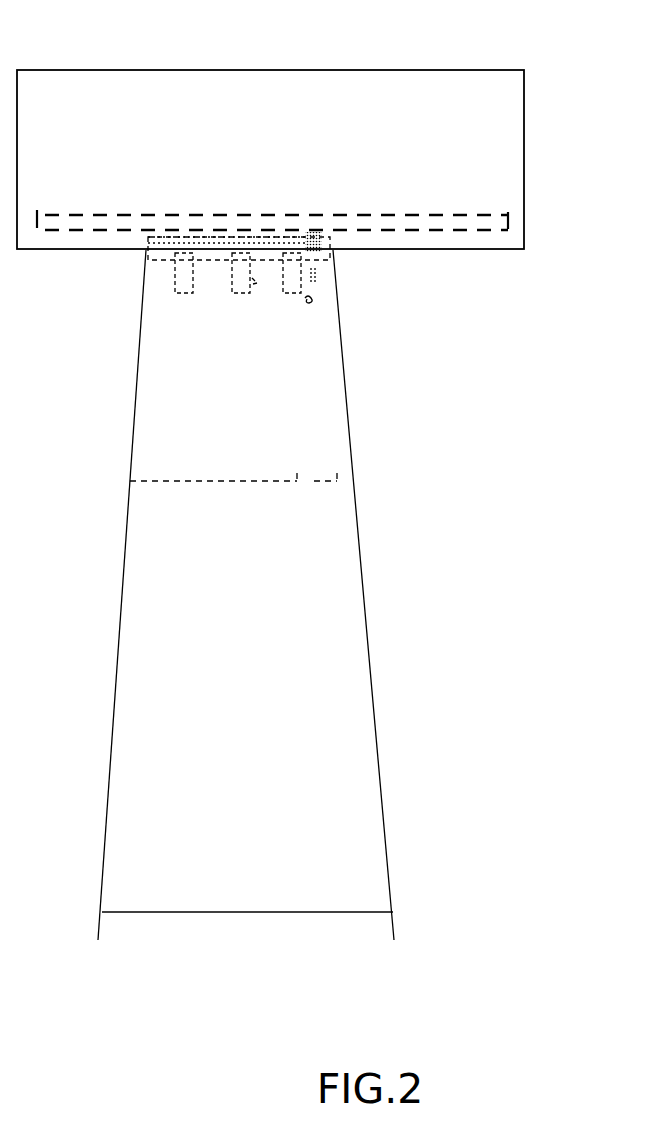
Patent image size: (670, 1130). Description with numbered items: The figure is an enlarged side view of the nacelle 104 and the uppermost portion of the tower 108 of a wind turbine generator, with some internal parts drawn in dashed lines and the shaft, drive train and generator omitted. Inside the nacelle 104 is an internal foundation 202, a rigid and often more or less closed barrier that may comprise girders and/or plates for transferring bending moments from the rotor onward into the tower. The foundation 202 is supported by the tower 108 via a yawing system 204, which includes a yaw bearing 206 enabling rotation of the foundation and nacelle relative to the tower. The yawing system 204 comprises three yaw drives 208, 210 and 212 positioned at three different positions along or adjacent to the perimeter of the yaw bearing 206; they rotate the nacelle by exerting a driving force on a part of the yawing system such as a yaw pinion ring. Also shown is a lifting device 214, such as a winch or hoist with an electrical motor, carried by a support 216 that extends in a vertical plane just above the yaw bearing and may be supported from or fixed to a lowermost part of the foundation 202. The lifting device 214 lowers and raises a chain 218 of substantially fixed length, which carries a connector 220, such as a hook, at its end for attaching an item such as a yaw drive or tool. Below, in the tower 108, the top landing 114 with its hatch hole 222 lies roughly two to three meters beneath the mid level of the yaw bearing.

The nacelle 104 is at (519, 68).
The internal foundation 202 is at (512, 218).
The yawing system 204 is at (111, 267).
The yaw bearing 206 is at (162, 262).
The yaw drive 208 is at (183, 292).
The yaw drive 210 is at (245, 293).
The yaw drive 212 is at (284, 293).
The lifting device 214 is at (312, 232).
The support 216 is at (163, 242).
The chain 218 is at (313, 274).
The connector 220 is at (315, 301).
The hatch hole 222 is at (315, 483).
The top landing 114 is at (222, 482).
The tower 108 is at (388, 866).